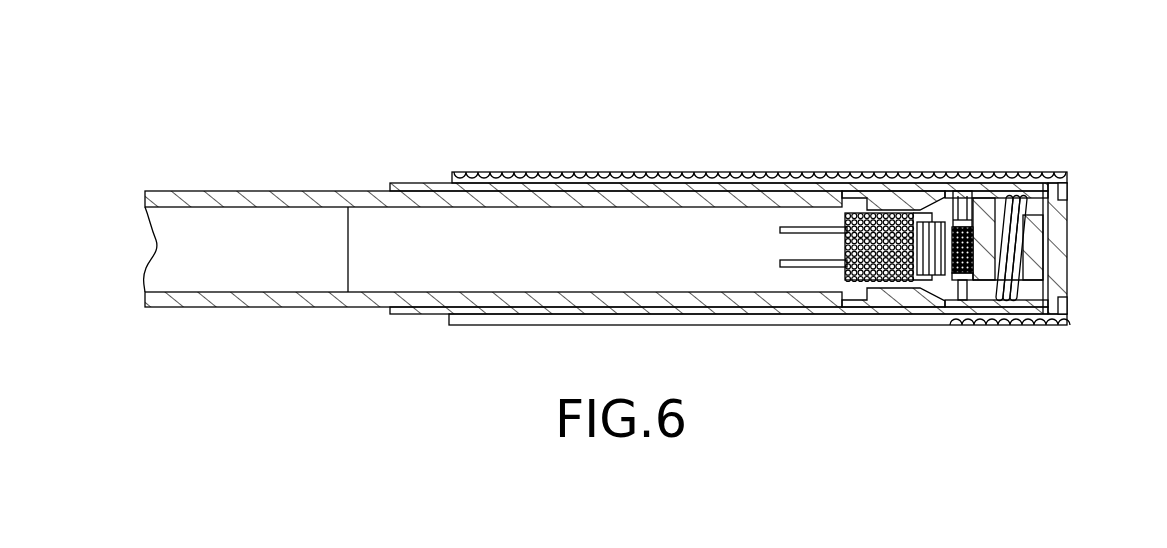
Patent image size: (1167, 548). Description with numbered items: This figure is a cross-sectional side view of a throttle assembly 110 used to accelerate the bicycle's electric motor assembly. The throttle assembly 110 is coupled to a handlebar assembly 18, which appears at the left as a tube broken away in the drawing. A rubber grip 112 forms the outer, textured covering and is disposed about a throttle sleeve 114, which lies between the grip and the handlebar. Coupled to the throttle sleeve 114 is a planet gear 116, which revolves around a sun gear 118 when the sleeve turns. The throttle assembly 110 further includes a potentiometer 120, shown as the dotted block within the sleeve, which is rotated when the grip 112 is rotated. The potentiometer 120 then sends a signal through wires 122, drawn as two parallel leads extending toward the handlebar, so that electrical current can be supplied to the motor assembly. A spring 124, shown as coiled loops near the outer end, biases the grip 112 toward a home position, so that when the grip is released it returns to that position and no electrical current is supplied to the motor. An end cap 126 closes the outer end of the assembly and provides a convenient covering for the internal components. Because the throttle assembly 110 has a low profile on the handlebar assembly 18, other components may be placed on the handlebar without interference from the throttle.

The handlebar assembly 18 is at (279, 191).
The throttle assembly 110 is at (818, 136).
The rubber grip 112 is at (520, 183).
The throttle sleeve 114 is at (421, 314).
The planet gear 116 is at (960, 200).
The sun gear 118 is at (958, 300).
The potentiometer 120 is at (857, 282).
The wires 122 is at (787, 237).
The spring 124 is at (1030, 200).
The end cap 126 is at (1068, 195).